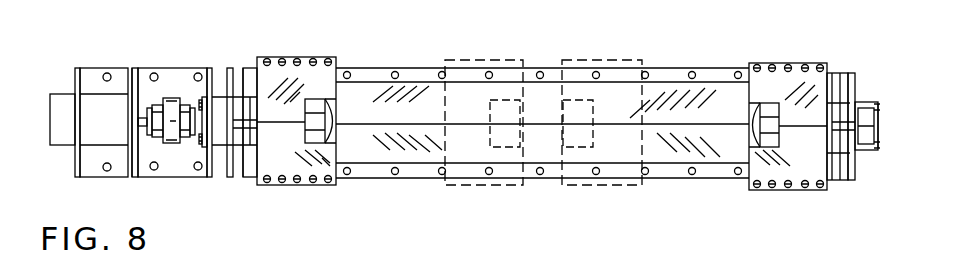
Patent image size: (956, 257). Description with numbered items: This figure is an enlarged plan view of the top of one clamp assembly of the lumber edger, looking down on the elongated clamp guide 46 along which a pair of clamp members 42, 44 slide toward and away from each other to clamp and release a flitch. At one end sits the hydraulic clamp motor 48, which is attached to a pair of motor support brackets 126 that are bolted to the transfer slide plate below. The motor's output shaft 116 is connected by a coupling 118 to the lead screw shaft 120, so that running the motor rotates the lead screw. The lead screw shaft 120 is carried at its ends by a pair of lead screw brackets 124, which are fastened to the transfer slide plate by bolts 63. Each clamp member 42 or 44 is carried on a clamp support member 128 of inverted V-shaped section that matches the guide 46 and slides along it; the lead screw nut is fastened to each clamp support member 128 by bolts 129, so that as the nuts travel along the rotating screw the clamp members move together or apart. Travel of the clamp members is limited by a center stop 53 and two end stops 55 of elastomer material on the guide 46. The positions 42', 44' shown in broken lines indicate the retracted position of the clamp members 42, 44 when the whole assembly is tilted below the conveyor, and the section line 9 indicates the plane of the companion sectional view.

The section line 9— 9 is at (35, 134).
The hydraulic clamp motor 48 is at (114, 97).
The motor support brackets 126 is at (77, 75).
The coupling 118 is at (173, 100).
The output shaft 116 is at (140, 126).
The lead screw shaft 120 is at (205, 125).
The lead screw brackets 124 is at (229, 82).
The clamp support member 128 is at (274, 75).
The bolts 129 is at (297, 176).
The clamp member 42 is at (320, 85).
The clamp member 44 is at (767, 85).
The clamp guide 46 is at (673, 95).
The center stop 53 is at (532, 178).
The bolts 63 is at (437, 176).
The retracted position of clamp member 42' is at (484, 101).
The retracted position of clamp member 44' is at (602, 103).
The end stops 55 is at (250, 164).